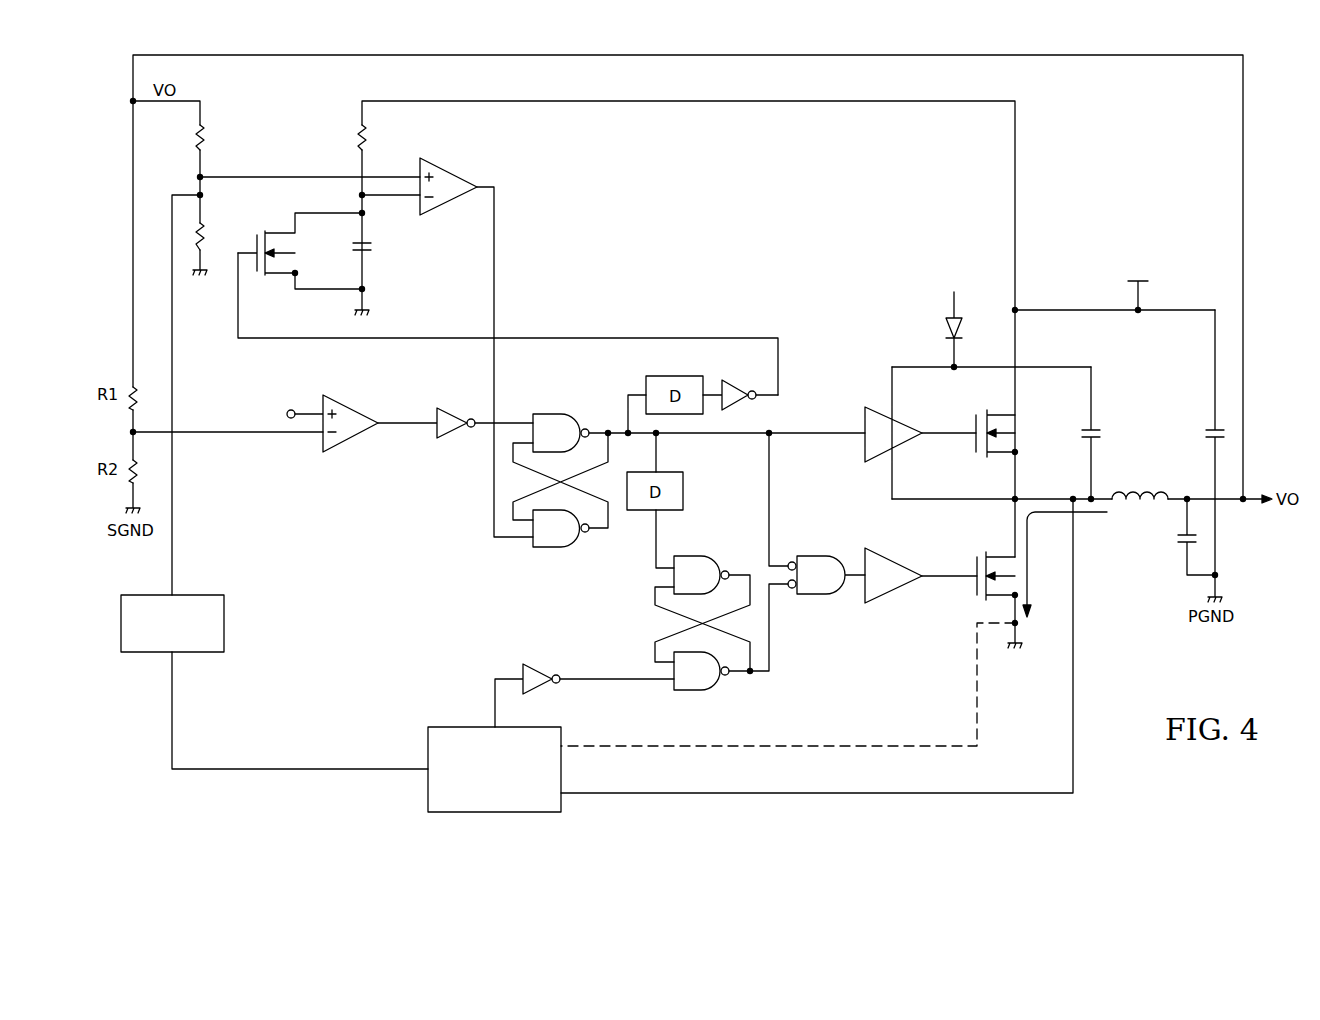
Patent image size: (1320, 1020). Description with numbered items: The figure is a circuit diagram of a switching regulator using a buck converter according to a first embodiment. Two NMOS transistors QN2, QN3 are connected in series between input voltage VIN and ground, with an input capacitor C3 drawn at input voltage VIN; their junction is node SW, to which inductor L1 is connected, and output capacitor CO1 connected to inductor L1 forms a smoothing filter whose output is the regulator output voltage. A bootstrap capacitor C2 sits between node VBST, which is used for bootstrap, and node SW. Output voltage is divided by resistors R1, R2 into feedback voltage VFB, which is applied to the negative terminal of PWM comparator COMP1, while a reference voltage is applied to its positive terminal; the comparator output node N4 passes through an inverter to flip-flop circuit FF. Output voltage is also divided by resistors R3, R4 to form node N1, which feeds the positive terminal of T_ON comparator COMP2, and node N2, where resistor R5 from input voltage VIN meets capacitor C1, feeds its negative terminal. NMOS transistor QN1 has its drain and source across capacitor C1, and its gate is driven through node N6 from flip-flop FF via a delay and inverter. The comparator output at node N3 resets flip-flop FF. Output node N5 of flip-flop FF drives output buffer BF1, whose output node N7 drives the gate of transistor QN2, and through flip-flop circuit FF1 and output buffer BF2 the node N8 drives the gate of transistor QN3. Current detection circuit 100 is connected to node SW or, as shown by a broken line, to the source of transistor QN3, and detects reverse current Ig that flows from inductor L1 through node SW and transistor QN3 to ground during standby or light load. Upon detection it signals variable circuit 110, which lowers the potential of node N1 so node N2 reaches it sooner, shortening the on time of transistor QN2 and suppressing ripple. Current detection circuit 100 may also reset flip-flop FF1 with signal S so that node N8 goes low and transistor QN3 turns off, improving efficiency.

The current detection circuit 100 is at (426, 790).
The variable circuit 110 is at (152, 654).
The resistor R1 is at (133, 398).
The resistor R2 is at (133, 471).
The resistor R3 is at (213, 137).
The resistor R4 is at (213, 236).
The resistor R5 is at (349, 137).
The capacitor C1 is at (374, 253).
The bootstrap capacitor C2 is at (1103, 434).
The input capacitor C3 is at (1201, 456).
The output capacitor CO1 is at (1175, 537).
The inductor L1 is at (1140, 482).
The NMOS transistor QN1 is at (300, 251).
The NMOS transistor QN2 is at (1015, 433).
The NMOS transistor QN3 is at (994, 565).
The PWM comparator COMP1 is at (314, 412).
The T_ON comparator COMP2 is at (446, 176).
The output buffer BF1 is at (884, 433).
The output buffer BF2 is at (893, 566).
The flip-flop circuit FF is at (689, 469).
The flip-flop circuit FF1 is at (721, 636).
The node N1 is at (310, 166).
The node N2 is at (391, 206).
The node N3 is at (505, 362).
The node N4 is at (455, 419).
The output node N5 is at (797, 488).
The node N6 is at (508, 324).
The output node N7 is at (949, 422).
The node N8 is at (949, 565).
The feedback voltage VFB is at (228, 421).
The bootstrap node VBST is at (991, 331).
The input voltage VIN is at (1115, 287).
The switching node SW is at (836, 635).
The reverse current Ig is at (1065, 564).
The signal S is at (576, 695).